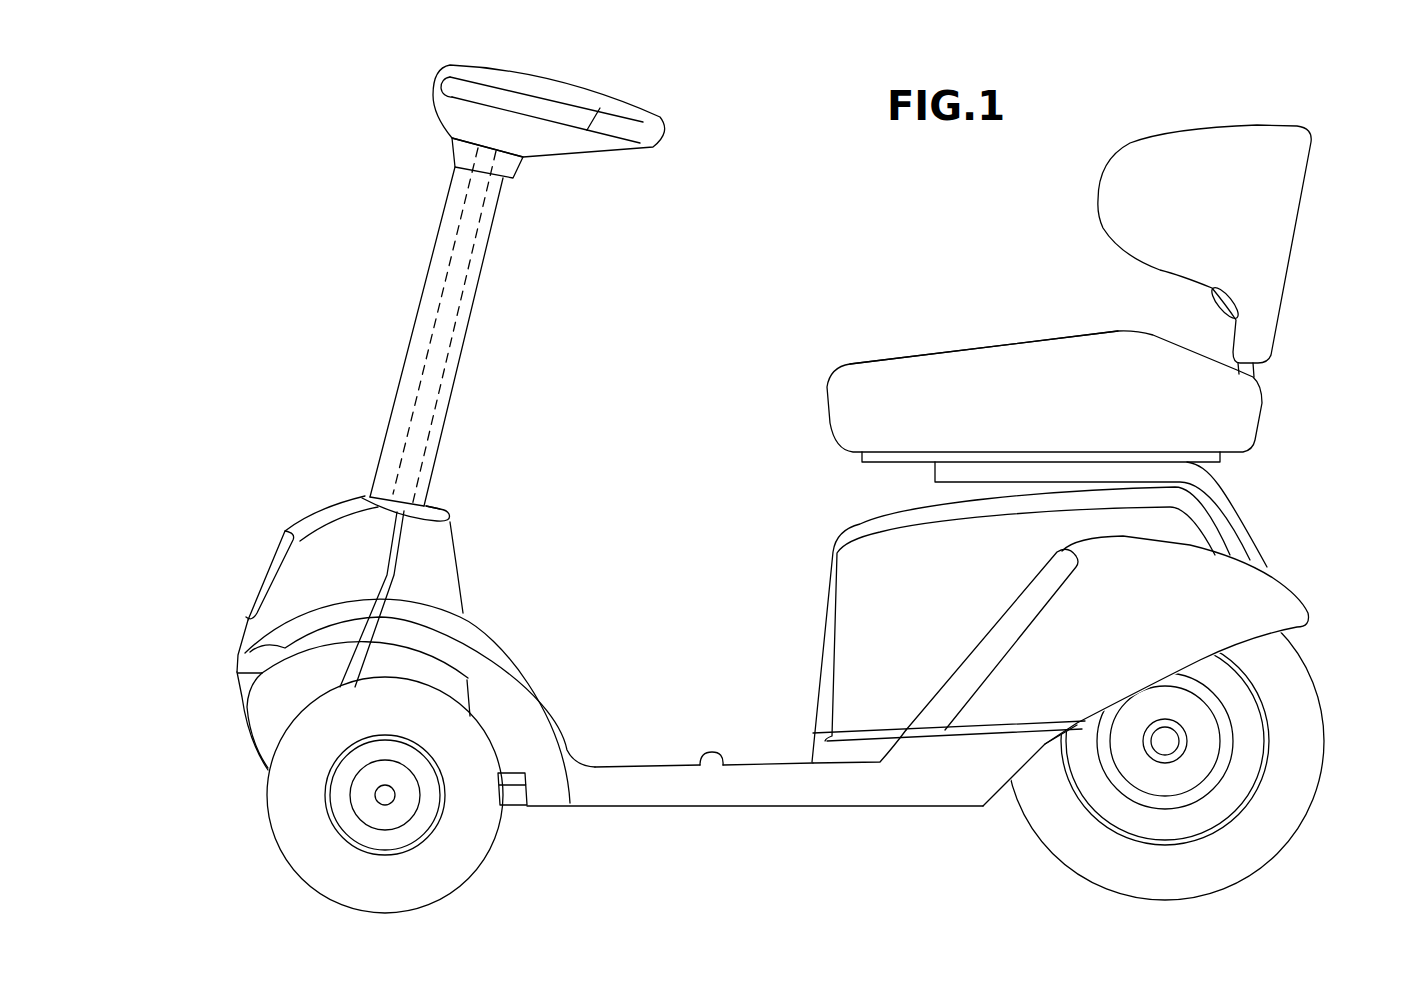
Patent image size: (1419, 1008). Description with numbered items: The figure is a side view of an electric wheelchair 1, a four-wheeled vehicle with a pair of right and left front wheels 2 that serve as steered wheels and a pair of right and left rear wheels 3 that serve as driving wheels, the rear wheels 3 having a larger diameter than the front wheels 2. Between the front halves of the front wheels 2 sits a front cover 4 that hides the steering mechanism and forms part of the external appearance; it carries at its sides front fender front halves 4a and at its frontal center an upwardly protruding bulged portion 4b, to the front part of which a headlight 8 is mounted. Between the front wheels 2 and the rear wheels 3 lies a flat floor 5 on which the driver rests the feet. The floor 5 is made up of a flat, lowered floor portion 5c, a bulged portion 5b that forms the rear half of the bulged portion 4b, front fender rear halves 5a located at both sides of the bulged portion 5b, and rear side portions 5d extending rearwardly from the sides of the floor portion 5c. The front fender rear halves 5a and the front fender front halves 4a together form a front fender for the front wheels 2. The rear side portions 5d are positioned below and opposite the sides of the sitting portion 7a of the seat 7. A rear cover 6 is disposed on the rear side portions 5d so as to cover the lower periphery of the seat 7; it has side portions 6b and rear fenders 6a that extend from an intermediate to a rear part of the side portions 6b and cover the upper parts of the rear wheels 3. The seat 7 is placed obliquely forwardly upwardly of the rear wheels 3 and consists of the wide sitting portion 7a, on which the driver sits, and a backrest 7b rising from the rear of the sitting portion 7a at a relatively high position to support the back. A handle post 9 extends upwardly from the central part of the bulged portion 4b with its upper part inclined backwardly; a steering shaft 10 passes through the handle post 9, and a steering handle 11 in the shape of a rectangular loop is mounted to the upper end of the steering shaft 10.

The electric wheelchair 1 is at (725, 365).
The front wheel 2 is at (303, 845).
The rear wheel 3 is at (1277, 822).
The front cover 4 is at (325, 555).
The front fender front half 4a is at (297, 652).
The bulged portion 4b is at (300, 585).
The floor 5 is at (620, 762).
The front fender rear half 5a is at (510, 690).
The bulged portion 5b is at (440, 577).
The floor portion 5c is at (722, 762).
The rear side portion 5d is at (940, 775).
The rear cover 6 is at (856, 580).
The rear fender 6a is at (1242, 595).
The side portion 6b is at (857, 643).
The seat 7 is at (970, 348).
The sitting portion 7a is at (1055, 333).
The backrest 7b is at (1262, 273).
The headlight 8 is at (247, 600).
The handle post 9 is at (463, 305).
The steering shaft 10 is at (457, 277).
The steering handle 11 is at (653, 113).